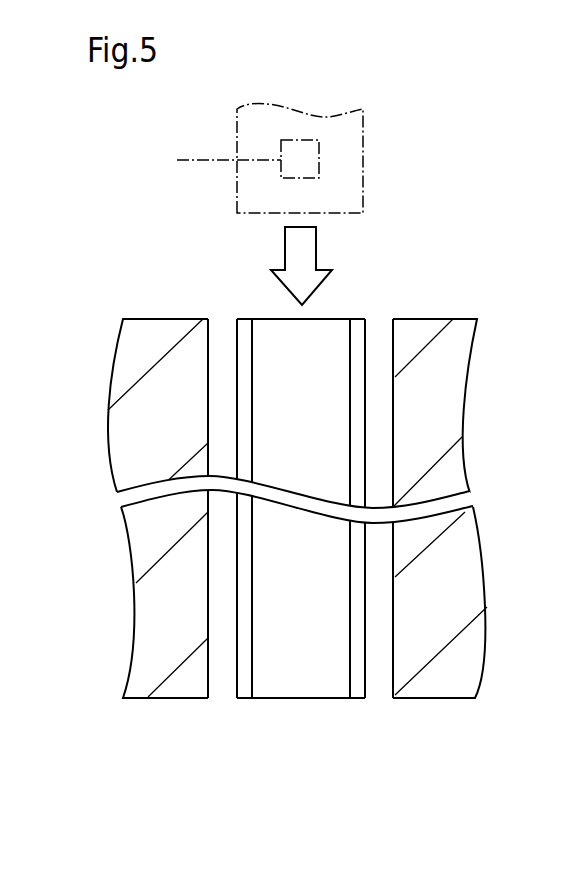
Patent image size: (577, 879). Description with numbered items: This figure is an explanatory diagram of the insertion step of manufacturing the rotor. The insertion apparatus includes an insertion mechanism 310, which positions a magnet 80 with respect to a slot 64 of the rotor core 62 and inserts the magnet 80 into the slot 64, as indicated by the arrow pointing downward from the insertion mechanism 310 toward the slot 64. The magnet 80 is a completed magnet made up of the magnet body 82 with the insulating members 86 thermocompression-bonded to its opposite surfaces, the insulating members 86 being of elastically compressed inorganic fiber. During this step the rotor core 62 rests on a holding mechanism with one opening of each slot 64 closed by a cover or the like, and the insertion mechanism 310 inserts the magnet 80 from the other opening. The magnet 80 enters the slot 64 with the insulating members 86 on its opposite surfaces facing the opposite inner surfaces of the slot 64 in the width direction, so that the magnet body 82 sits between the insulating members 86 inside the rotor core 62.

The insertion mechanism 310 is at (192, 160).
The magnet 80 is at (281, 460).
The magnet body 82 is at (365, 770).
The insulating members 86 is at (245, 699).
The rotor core 62 is at (423, 319).
The slot 64 is at (210, 340).